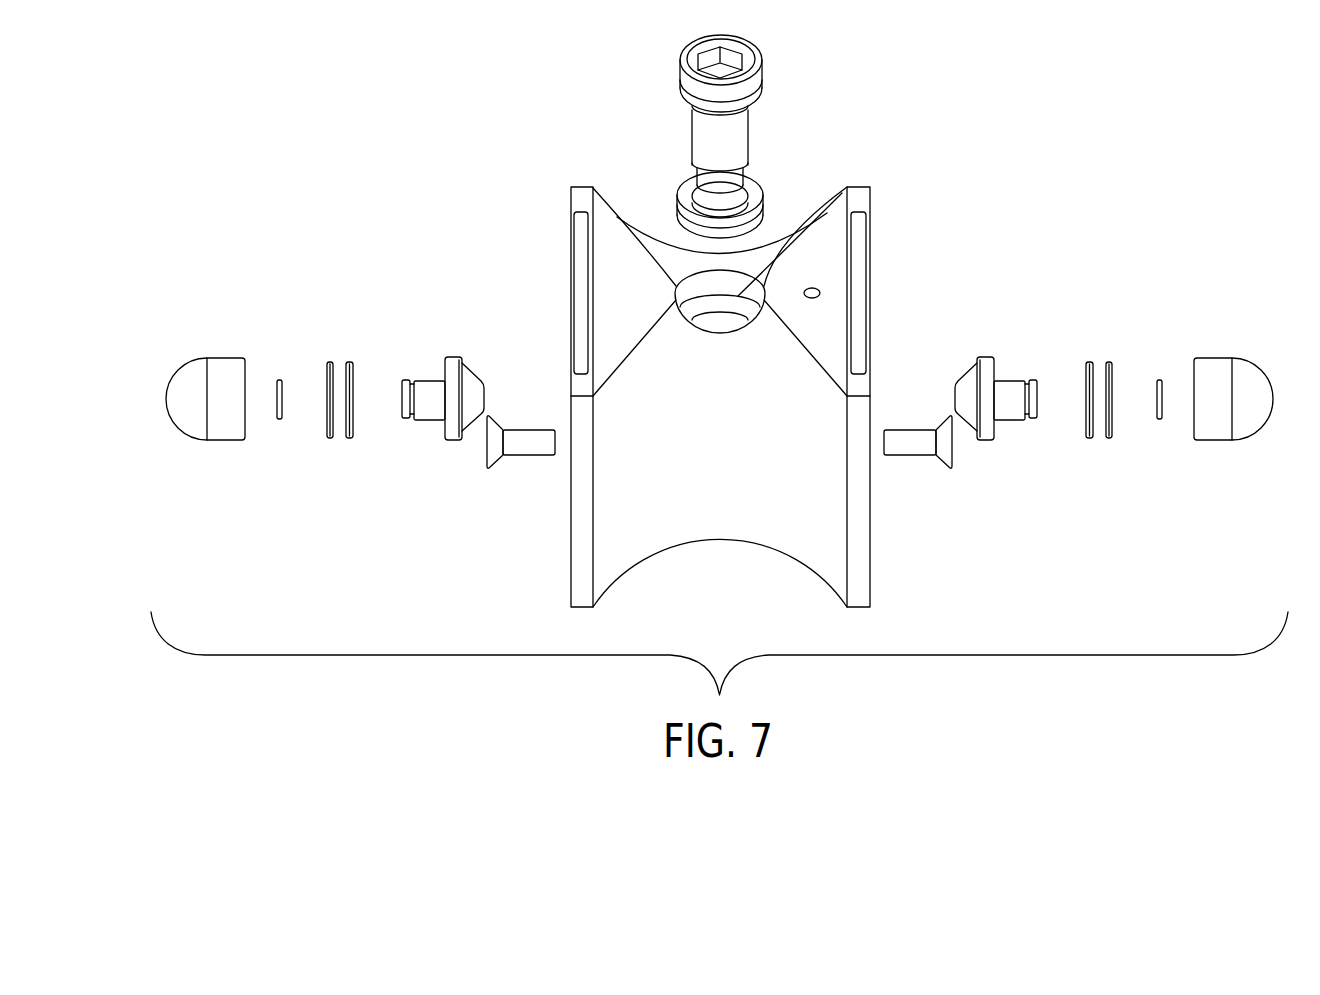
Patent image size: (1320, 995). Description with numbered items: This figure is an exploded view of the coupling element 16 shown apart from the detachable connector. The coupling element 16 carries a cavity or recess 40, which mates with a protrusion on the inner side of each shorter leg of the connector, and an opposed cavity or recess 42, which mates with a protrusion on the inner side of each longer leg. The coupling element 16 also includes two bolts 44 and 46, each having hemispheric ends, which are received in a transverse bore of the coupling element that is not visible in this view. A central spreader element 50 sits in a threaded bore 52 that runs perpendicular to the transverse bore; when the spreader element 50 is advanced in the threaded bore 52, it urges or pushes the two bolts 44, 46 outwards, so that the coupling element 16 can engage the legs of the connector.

The coupling element 16 is at (719, 365).
The cavity or recess 40 is at (587, 277).
The opposed cavity or recess 42 is at (857, 287).
The bolt 44 is at (226, 375).
The bolt 46 is at (1212, 375).
The central spreader element 50 is at (735, 133).
The threaded bore 52 is at (738, 296).